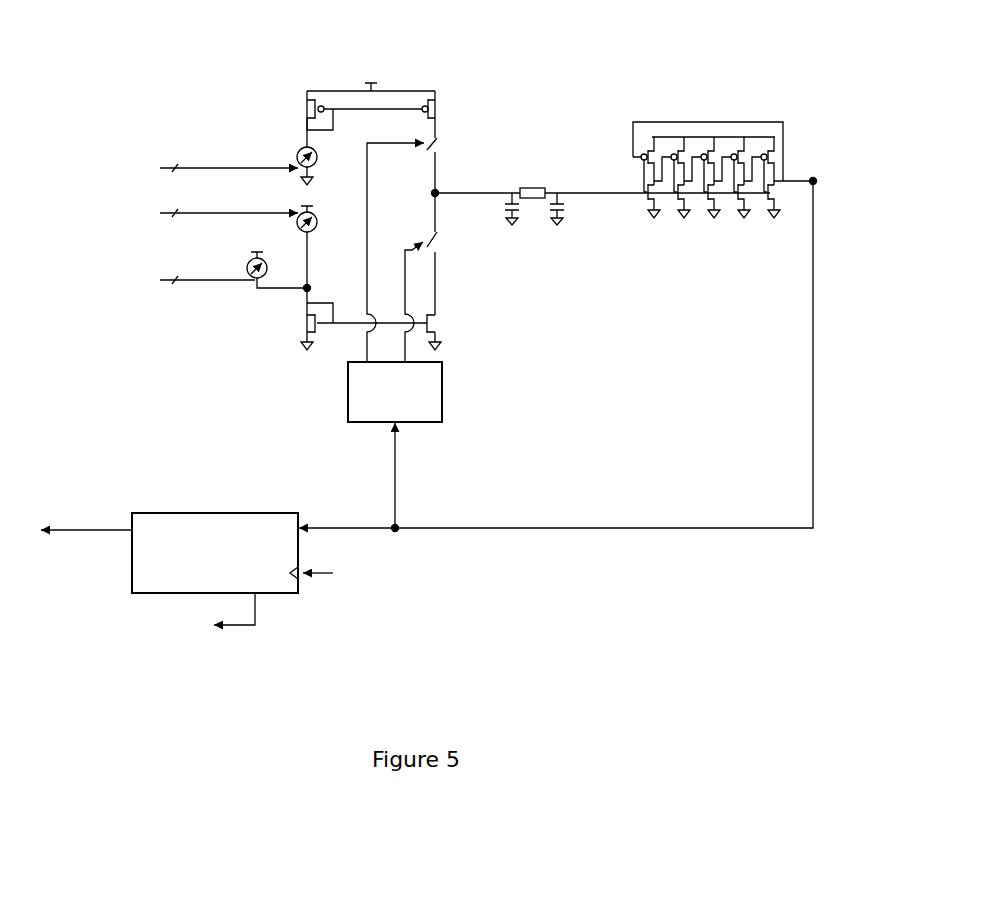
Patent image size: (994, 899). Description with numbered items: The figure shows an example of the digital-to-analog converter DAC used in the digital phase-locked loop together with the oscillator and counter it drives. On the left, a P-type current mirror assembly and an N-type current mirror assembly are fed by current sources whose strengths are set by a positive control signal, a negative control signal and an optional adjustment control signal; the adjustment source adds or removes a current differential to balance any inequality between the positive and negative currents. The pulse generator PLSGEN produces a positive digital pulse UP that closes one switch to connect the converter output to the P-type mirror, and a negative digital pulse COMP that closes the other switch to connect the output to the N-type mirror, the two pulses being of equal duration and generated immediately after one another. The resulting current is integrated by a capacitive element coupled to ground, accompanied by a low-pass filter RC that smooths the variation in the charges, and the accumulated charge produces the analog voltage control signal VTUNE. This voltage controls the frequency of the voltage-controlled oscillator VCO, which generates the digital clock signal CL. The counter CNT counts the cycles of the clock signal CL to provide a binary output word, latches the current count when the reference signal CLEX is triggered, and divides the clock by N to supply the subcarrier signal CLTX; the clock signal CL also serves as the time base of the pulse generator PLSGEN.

The digital-to-analog converter DAC is at (457, 119).
The positive digital pulse UP is at (395, 242).
The negative digital pulse COMP is at (402, 290).
The pulse generator PLSGEN is at (395, 445).
The analog voltage control signal VTUNE is at (602, 183).
The low-pass filter RC is at (526, 217).
The voltage-controlled oscillator VCO is at (787, 99).
The clock signal CL is at (815, 177).
The counter CNT is at (211, 577).
The reference signal CLEX is at (344, 575).
The subcarrier signal CLTX is at (233, 628).